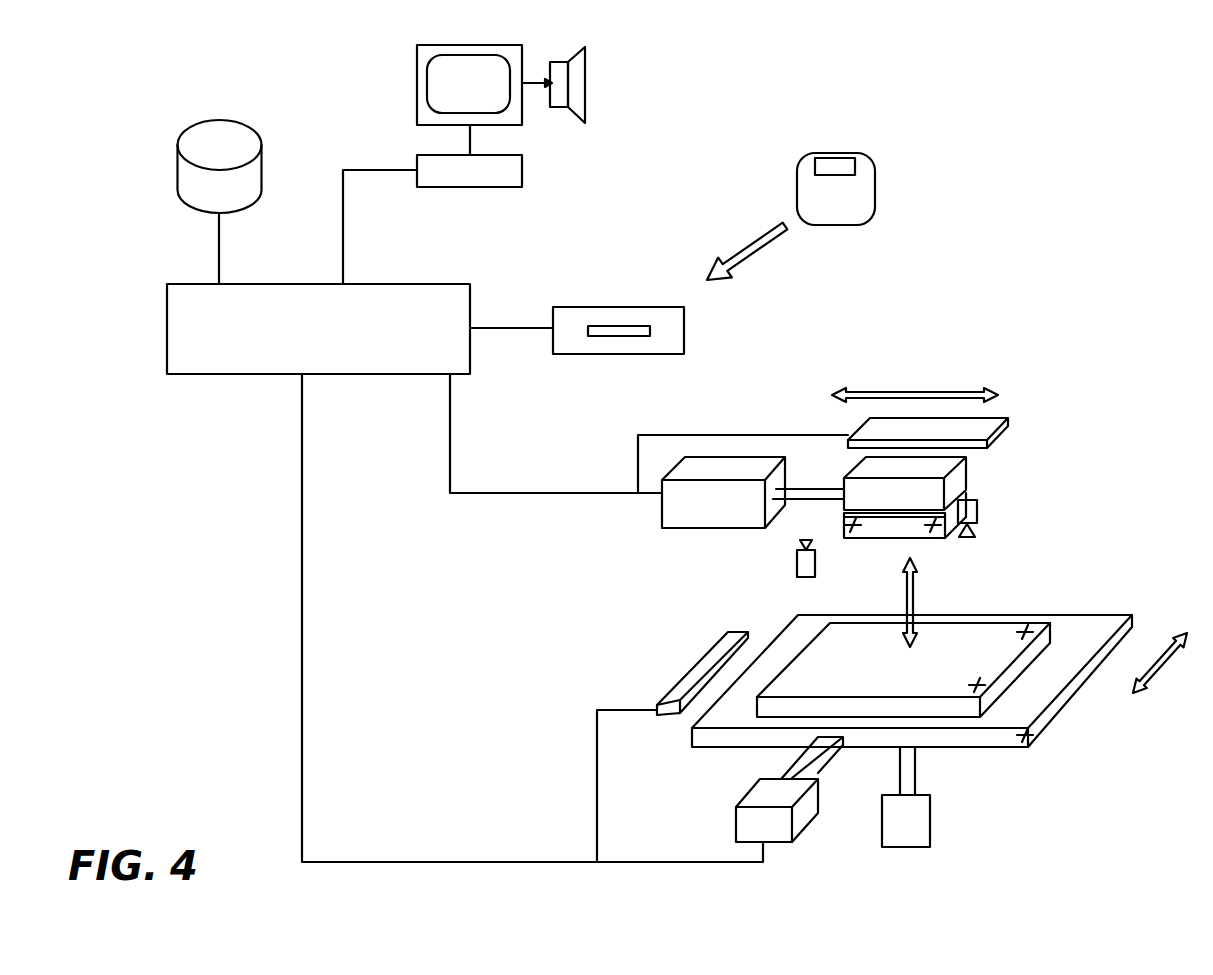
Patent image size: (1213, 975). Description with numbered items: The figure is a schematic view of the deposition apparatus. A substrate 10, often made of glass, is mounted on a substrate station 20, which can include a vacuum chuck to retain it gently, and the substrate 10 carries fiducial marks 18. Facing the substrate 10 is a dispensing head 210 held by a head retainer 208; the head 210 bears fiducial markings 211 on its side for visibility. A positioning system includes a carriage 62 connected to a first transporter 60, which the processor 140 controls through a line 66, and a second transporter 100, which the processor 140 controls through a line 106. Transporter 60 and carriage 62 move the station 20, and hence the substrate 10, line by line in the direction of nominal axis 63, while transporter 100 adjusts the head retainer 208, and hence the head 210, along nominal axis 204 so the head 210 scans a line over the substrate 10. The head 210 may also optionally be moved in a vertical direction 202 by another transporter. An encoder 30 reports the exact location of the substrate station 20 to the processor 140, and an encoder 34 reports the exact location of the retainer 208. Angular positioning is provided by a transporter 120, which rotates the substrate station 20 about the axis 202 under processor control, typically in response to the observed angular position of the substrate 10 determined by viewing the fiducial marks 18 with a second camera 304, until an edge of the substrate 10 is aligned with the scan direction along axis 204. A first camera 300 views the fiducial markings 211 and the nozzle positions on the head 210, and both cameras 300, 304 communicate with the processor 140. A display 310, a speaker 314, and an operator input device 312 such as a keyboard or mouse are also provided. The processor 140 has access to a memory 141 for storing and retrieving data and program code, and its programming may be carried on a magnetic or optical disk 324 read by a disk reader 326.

The substrate 10 is at (842, 632).
The fiducial marks 18 is at (980, 688).
The substrate station 20 is at (1027, 758).
The encoder 30 is at (688, 670).
The encoder 34 is at (1010, 430).
The first transporter 60 is at (798, 832).
The carriage 62 is at (790, 760).
The nominal axis 63 is at (1163, 670).
The line 66 is at (300, 543).
The second transporter 100 is at (660, 512).
The line 106 is at (557, 493).
The transporter 120 is at (933, 825).
The processor 140 is at (323, 340).
The memory 141 is at (207, 215).
The vertical direction 202 is at (915, 598).
The nominal axis 204 is at (912, 393).
The head retainer 208 is at (962, 482).
The dispensing head 210 is at (843, 525).
The fiducial markings 211 is at (853, 523).
The first camera 300 is at (795, 570).
The second camera 304 is at (978, 515).
The display 310 is at (417, 80).
The operator input device 312 is at (522, 170).
The speaker 314 is at (585, 78).
The magnetic or optical disk 324 is at (848, 153).
The disk reader 326 is at (662, 307).